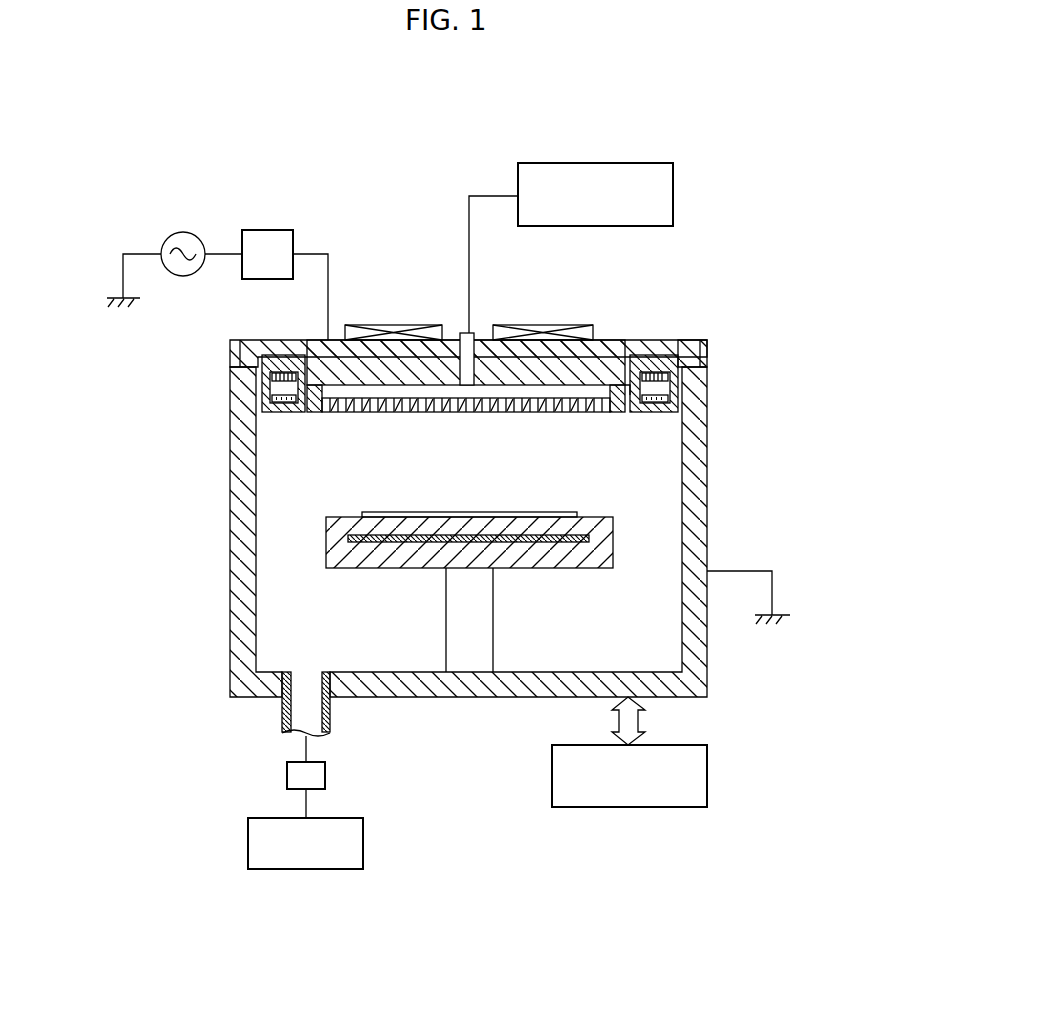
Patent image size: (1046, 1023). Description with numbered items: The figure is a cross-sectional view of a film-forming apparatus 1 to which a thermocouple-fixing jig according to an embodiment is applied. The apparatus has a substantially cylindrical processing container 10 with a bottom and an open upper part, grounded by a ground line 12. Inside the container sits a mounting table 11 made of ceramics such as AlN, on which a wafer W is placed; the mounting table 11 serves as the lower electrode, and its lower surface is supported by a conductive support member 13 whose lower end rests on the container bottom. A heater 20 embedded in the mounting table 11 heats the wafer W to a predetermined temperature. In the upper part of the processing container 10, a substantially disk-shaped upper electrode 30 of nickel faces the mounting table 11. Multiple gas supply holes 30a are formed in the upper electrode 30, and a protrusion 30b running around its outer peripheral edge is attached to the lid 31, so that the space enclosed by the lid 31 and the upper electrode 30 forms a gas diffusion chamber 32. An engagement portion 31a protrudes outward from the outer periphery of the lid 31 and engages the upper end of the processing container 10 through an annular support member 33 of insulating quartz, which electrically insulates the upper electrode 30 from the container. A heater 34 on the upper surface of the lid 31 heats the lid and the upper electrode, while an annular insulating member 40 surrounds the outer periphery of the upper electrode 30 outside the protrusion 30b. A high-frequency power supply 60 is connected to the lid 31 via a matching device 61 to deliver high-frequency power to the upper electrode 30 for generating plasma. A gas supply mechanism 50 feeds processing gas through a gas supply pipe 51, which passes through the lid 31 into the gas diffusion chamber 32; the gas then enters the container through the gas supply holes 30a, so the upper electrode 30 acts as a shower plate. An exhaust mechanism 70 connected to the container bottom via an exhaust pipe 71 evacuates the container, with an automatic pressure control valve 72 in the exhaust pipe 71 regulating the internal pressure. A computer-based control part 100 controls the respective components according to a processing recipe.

The film-forming apparatus 1 is at (668, 122).
The processing container 10 is at (212, 407).
The mounting table 11 is at (377, 518).
The ground line 12 is at (745, 571).
The support member 13 is at (446, 609).
The heater 20 is at (577, 545).
The upper electrode 30 is at (534, 412).
The gas supply holes 30a is at (459, 413).
The protrusion 30b is at (626, 384).
The lid 31 is at (452, 340).
The engagement portion 31a is at (684, 338).
The gas diffusion chamber 32 is at (337, 395).
The annular support member 33 is at (230, 345).
The heater 34 is at (398, 323).
The annular insulating member 40 is at (678, 392).
The gas supply mechanism 50 is at (673, 193).
The gas supply pipe 51 is at (469, 221).
The high-frequency power supply 60 is at (184, 232).
The matching device 61 is at (278, 230).
The exhaust mechanism 70 is at (248, 846).
The exhaust pipe 71 is at (330, 717).
The automatic pressure control valve 72 is at (287, 776).
The control part 100 is at (687, 807).
The wafer W is at (494, 512).